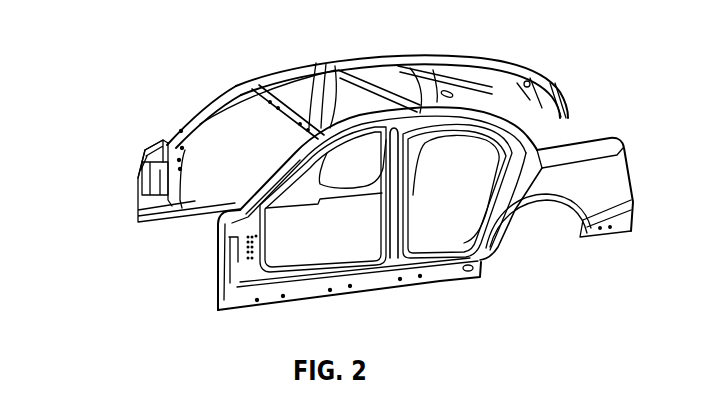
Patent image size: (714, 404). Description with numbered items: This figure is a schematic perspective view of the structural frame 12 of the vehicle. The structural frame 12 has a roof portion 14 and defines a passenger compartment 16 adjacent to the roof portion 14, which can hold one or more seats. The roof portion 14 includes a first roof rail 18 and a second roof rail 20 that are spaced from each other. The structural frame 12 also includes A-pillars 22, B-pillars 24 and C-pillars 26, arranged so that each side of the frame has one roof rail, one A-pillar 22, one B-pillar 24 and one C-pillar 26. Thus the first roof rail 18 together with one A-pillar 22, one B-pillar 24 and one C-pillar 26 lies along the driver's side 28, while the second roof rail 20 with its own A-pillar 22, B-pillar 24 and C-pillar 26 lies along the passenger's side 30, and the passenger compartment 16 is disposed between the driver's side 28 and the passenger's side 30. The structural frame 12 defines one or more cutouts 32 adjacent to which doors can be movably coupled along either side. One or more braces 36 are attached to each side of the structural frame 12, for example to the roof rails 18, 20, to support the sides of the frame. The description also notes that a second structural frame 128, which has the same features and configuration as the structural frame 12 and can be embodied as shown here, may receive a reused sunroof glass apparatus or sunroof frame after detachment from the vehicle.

The structural frame 12 is at (135, 107).
The roof portion 14 is at (364, 52).
The passenger compartment 16 is at (177, 245).
The first roof rail 18 is at (432, 113).
The second roof rail 20 is at (325, 62).
The A-pillar 22 is at (214, 108).
The B-pillar 24 is at (318, 86).
The C-pillar 26 is at (473, 63).
The driver's side 28 is at (343, 305).
The passenger's side 30 is at (127, 192).
The cutout 32 is at (296, 146).
The brace 36 is at (250, 88).
The second structural frame 128 is at (120, 146).